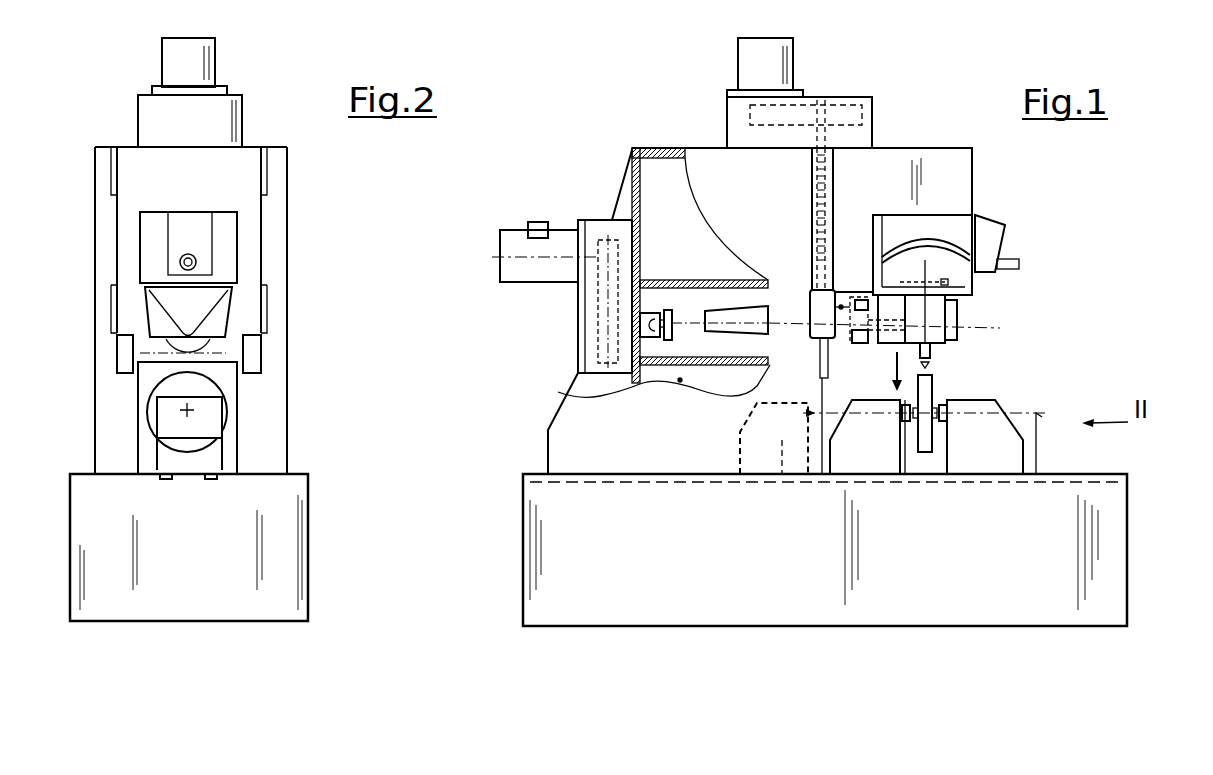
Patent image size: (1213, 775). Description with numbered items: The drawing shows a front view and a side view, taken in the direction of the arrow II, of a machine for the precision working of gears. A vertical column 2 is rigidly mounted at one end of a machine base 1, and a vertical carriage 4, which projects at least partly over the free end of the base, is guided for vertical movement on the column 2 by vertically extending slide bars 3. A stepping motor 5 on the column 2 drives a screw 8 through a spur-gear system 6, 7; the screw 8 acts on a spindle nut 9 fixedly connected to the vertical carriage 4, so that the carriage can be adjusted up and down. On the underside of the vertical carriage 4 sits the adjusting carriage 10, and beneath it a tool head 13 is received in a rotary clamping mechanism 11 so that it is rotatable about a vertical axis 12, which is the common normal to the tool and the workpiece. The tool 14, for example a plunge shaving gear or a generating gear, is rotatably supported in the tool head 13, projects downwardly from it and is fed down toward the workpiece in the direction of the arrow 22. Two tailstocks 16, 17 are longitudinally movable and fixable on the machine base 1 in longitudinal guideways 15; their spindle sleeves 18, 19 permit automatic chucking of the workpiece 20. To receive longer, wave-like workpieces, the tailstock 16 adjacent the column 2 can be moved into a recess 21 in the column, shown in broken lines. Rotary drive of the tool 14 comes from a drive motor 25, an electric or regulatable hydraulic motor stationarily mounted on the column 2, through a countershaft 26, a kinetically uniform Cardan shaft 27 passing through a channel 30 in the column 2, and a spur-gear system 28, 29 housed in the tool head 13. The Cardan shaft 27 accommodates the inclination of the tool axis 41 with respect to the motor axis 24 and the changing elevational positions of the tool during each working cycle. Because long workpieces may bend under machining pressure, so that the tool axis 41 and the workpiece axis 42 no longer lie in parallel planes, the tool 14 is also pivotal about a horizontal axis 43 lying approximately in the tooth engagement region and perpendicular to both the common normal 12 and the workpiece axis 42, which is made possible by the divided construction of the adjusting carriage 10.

In FIG. 1, the machine base 1 is at (568, 568).
In FIG. 1, the vertical column 2 is at (612, 438).
In FIG. 1, the slide bars 3 is at (820, 368).
In FIG. 1, the vertical carriage 4 is at (937, 173).
In FIG. 1, the stepping motor 5 is at (771, 50).
In FIG. 1, the spur gear 6 is at (748, 113).
In FIG. 1, the spur gear 7 is at (842, 115).
In FIG. 1, the screw 8 is at (812, 220).
In FIG. 1, the spindle nut 9 is at (812, 208).
In FIG. 1, the adjusting carriage 10 is at (1030, 234).
In FIG. 1, the rotary clamping mechanism 11 is at (955, 282).
In FIG. 1, the vertical axis 12 is at (927, 367).
In FIG. 1, the tool head 13 is at (935, 312).
In FIG. 1, the tool 14 is at (932, 353).
In FIG. 2, the longitudinal guideways 15 is at (163, 479).
In FIG. 1, the longitudinal guideways 15 is at (713, 367).
In FIG. 2, the tailstock 16 is at (188, 456).
In FIG. 1, the tailstock 16 is at (853, 450).
In FIG. 1, the tailstock 17 is at (969, 445).
In FIG. 1, the spindle sleeve 18 is at (906, 422).
In FIG. 1, the spindle sleeve 19 is at (945, 422).
In FIG. 1, the workpiece 20 is at (925, 446).
In FIG. 2, the recess 21 is at (231, 447).
In FIG. 1, the recess 21 is at (680, 381).
In FIG. 1, the arrow 22 is at (893, 370).
In FIG. 1, the motor axis 24 is at (484, 256).
In FIG. 1, the drive motor 25 is at (515, 240).
In FIG. 1, the countershaft 26 is at (610, 303).
In FIG. 1, the Cardan shaft 27 is at (747, 325).
In FIG. 1, the spur gear 28 is at (857, 300).
In FIG. 1, the spur gear 29 is at (857, 300).
In FIG. 1, the channel 30 is at (725, 345).
In FIG. 1, the tool axis 41 is at (1022, 328).
In FIG. 1, the workpiece axis 42 is at (1036, 474).
In FIG. 2, the horizontal axis 43 is at (232, 352).